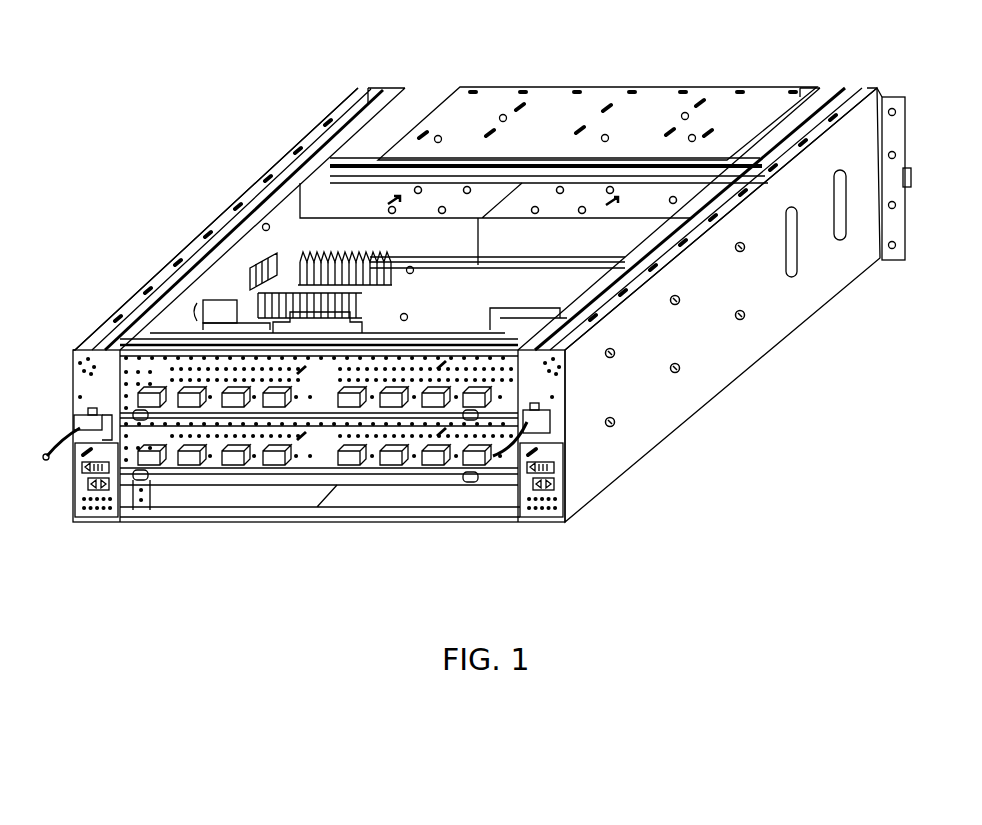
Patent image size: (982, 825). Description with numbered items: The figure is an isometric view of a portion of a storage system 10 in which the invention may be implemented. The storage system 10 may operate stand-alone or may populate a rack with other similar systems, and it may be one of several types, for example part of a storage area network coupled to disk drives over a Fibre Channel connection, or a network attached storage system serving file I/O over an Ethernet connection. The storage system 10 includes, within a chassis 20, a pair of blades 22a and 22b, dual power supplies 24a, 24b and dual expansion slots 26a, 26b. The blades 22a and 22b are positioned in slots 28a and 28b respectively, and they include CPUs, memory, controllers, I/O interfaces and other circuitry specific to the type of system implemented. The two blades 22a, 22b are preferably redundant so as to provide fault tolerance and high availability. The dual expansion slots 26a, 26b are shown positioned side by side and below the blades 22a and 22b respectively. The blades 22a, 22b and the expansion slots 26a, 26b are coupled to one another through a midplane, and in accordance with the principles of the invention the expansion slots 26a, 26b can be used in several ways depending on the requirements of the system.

The storage system 10 is at (312, 43).
The chassis 20 is at (723, 365).
The blade 22a is at (440, 293).
The blade 22b is at (315, 450).
The power supply 24a is at (290, 200).
The power supply 24b is at (750, 172).
The expansion slot 26a is at (262, 490).
The expansion slot 26b is at (425, 490).
The slot 28a is at (118, 382).
The slot 28b is at (155, 433).